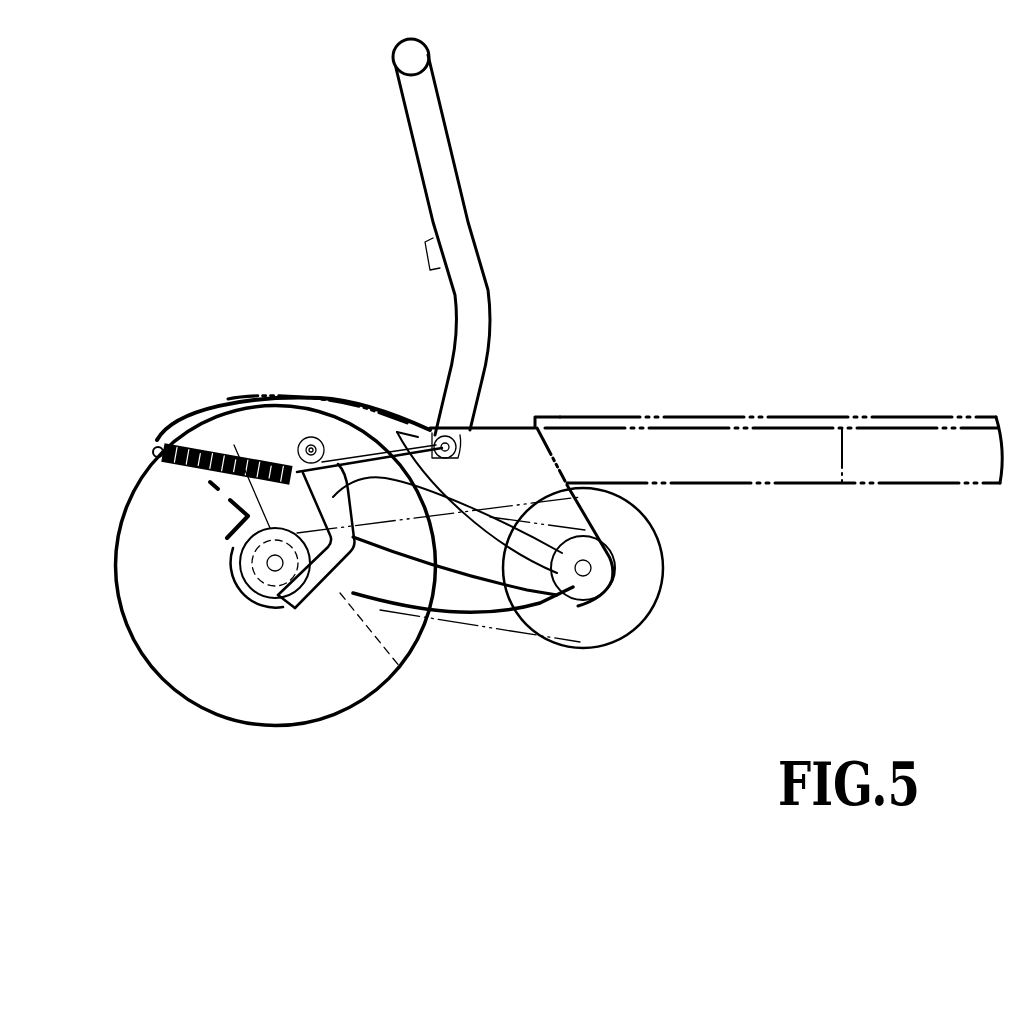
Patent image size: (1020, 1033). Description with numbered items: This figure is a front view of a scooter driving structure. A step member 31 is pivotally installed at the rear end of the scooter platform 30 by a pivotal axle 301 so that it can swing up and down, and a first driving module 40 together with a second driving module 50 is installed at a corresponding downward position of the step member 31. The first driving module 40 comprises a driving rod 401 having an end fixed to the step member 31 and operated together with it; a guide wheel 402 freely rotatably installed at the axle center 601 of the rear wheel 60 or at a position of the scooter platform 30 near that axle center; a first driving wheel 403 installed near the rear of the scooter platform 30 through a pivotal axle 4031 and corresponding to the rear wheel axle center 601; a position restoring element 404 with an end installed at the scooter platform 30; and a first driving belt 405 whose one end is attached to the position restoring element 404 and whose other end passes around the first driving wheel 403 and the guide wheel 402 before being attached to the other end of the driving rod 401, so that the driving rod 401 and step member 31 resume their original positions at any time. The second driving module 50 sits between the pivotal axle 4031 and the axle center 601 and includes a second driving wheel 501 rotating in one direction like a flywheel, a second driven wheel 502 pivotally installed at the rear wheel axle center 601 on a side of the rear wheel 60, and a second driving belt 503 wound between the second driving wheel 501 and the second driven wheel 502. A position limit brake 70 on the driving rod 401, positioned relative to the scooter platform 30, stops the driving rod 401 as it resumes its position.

The scooter platform 30 is at (692, 438).
The pivotal axle 301 is at (453, 440).
The step member 31 is at (422, 54).
The first driving module 40 is at (312, 237).
The driving rod 401 is at (336, 448).
The guide wheel 402 is at (226, 430).
The first driving wheel 403 is at (397, 432).
The pivotal axle 4031 is at (440, 470).
The position restoring element 404 is at (185, 440).
The first driving belt 405 is at (305, 445).
The position limit brake 70 is at (290, 422).
The rear wheel 60 is at (155, 598).
The axle center 601 is at (268, 563).
The second driving module 50 is at (590, 755).
The second driving wheel 501 is at (565, 633).
The second driven wheel 502 is at (400, 667).
The second driving belt 503 is at (455, 622).